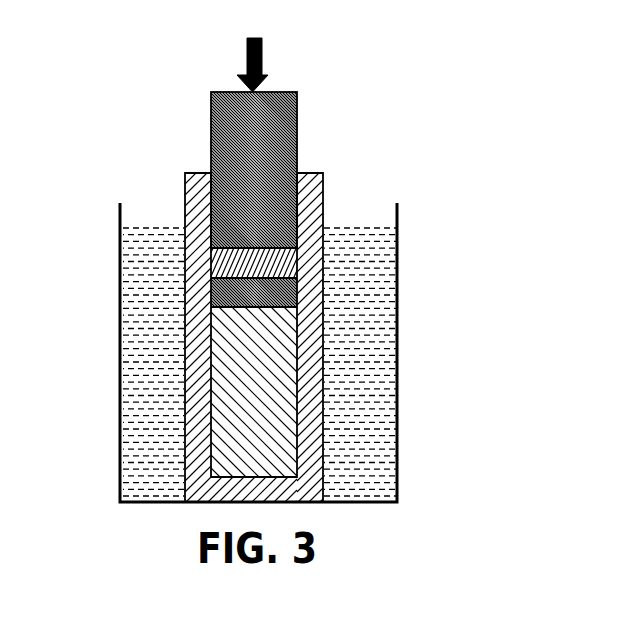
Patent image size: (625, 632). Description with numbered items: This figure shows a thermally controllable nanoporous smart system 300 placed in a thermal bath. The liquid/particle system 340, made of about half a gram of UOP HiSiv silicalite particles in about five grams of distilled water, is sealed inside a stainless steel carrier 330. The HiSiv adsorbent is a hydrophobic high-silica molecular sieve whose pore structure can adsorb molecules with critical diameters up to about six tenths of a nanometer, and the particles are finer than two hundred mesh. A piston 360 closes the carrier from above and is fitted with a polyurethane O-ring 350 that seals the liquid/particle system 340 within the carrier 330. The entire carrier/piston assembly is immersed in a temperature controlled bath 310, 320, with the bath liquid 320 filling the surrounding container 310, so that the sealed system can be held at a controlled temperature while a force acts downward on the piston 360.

The thermally controllable nanoporous smart system 300 is at (301, 255).
The temperature controlled bath 310 is at (400, 457).
The temperature controlled bath 320 is at (377, 413).
The stainless steel carrier 330 is at (197, 427).
The liquid/particle system 340 is at (230, 372).
The O-ring 350 is at (223, 262).
The piston 360 is at (228, 143).